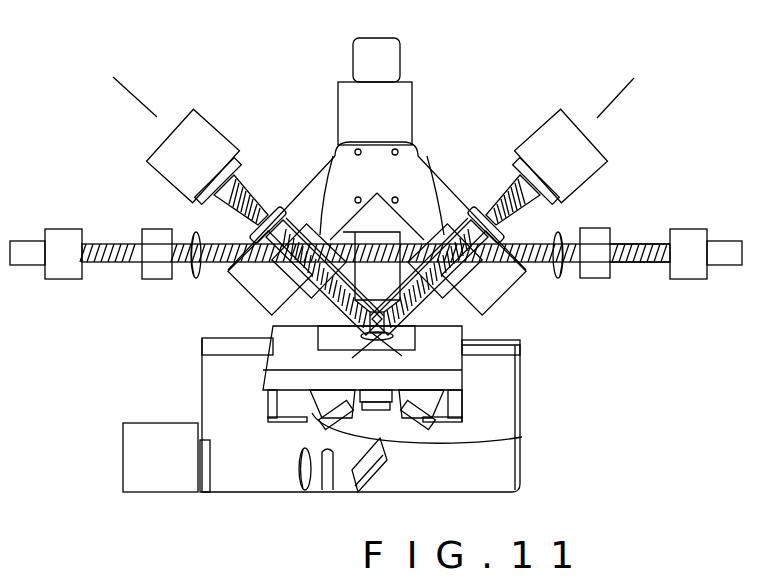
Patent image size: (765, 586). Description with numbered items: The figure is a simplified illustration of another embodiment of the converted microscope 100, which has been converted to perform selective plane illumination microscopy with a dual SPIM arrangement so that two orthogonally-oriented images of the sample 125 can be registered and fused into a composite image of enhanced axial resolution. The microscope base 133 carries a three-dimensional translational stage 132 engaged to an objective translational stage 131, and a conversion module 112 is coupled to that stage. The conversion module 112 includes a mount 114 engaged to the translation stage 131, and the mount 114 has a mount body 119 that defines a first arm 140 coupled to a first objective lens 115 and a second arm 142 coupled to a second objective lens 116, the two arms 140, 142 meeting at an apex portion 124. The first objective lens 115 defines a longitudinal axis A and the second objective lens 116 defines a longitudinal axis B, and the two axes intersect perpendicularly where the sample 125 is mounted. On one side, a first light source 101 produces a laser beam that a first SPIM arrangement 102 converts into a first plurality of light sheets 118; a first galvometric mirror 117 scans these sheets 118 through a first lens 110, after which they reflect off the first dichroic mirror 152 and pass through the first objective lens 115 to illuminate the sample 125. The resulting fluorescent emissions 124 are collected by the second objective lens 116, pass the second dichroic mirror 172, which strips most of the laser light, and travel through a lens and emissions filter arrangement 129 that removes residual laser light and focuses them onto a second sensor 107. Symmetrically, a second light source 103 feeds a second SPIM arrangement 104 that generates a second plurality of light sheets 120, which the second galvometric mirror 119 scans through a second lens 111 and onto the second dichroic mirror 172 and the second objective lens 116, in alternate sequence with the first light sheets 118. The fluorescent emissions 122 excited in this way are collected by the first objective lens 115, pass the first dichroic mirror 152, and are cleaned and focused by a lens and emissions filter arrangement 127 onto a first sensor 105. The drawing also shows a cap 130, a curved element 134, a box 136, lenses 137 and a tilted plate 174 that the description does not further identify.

The converted microscope 100 is at (520, 80).
The first light source 101 is at (42, 263).
The first SPIM arrangement 102 is at (75, 198).
The second light source 103 is at (727, 265).
The second SPIM arrangement 104 is at (692, 229).
The first sensor 105 is at (170, 160).
The second sensor 107 is at (583, 160).
The first lens 110 is at (198, 278).
The second lens 111 is at (560, 278).
The conversion module 112 is at (243, 82).
The mount 114 is at (550, 100).
The first objective lens 115 is at (312, 320).
The second objective lens 116 is at (467, 327).
The first galvometric mirror 117 is at (158, 229).
The first plurality of light sheets 118 is at (130, 262).
The second galvometric mirror 119 is at (428, 162).
The second plurality of light sheets 120 is at (642, 247).
The fluorescent emissions 122 is at (240, 172).
The fluorescent emissions 124 is at (380, 150).
The sample 125 is at (455, 368).
The lens and emissions filter arrangement 127 is at (250, 226).
The lens and emissions filter arrangement 129 is at (504, 188).
The cap 130 is at (380, 47).
The objective translational stage 131 is at (355, 100).
The three-dimensional translational stage 132 is at (475, 350).
The microscope base 133 is at (522, 382).
The curved guide 134 is at (445, 428).
The control box 136 is at (172, 483).
The lens 137 is at (304, 492).
The first arm 140 is at (250, 290).
The second arm 142 is at (497, 283).
The first dichroic mirror 152 is at (333, 160).
The second dichroic mirror 172 is at (441, 178).
The mirror 174 is at (370, 466).
The longitudinal axis A is at (130, 97).
The longitudinal axis B is at (630, 97).